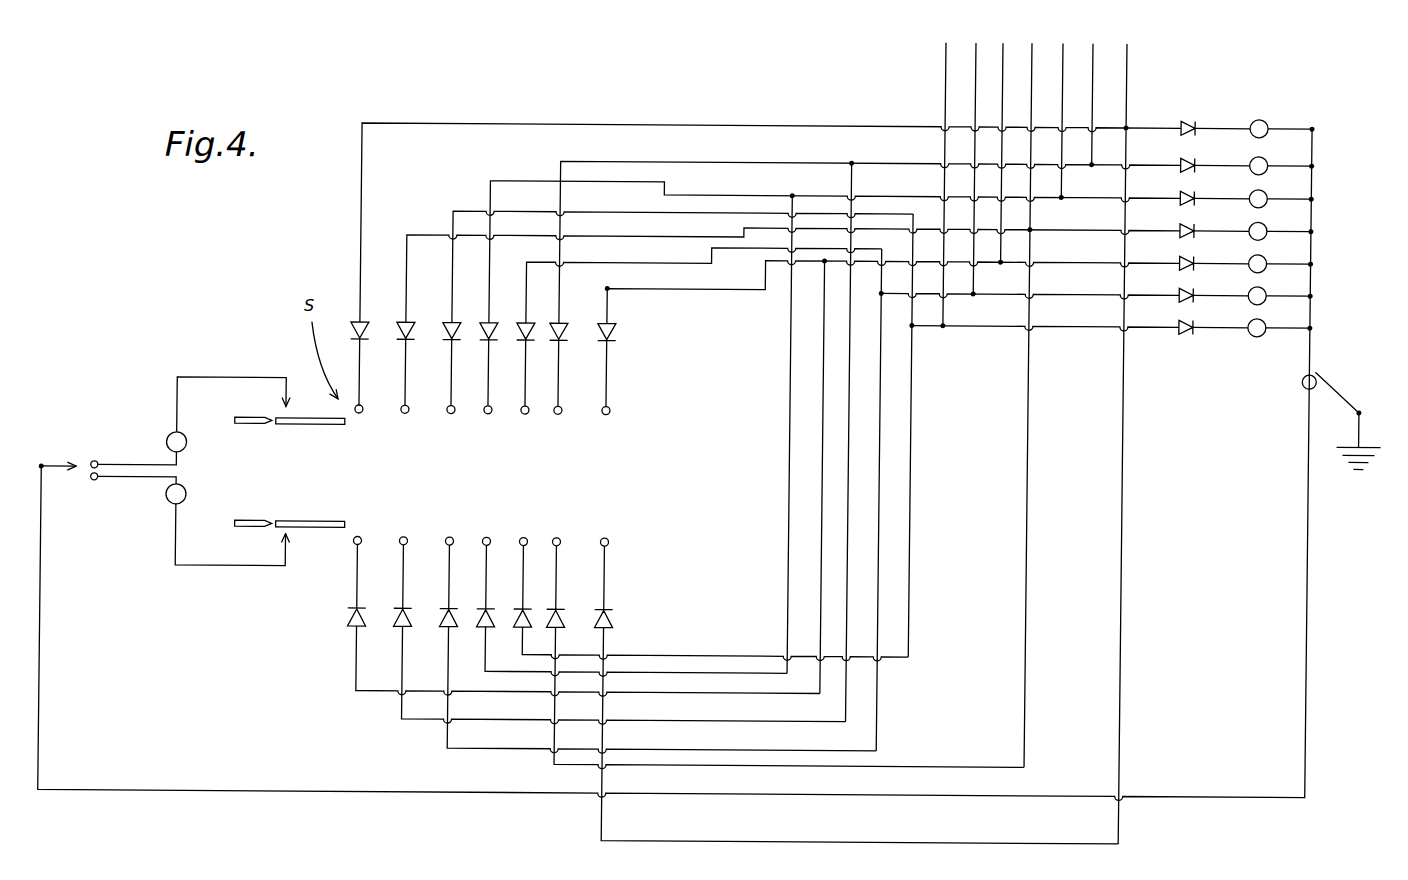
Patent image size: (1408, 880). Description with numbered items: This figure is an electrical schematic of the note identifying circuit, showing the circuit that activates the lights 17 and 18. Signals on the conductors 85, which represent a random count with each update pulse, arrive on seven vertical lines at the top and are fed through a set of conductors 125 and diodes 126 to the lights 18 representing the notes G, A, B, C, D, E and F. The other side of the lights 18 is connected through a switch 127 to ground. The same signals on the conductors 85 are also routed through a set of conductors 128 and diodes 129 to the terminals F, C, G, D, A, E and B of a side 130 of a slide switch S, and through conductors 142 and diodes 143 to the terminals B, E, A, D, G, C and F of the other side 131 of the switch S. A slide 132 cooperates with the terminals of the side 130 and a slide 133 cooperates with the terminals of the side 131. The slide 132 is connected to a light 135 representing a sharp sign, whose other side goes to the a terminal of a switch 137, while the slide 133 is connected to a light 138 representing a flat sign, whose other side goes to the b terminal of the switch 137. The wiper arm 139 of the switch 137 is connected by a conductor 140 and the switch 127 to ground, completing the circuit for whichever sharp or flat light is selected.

The lights 17 is at (156, 450).
The lights 18 is at (1267, 108).
The conductors 85 is at (975, 91).
The conductors 125 is at (1150, 193).
The diodes 126 is at (1209, 115).
The switch 127 is at (1347, 378).
The conductors 128 is at (752, 123).
The diodes 129 is at (624, 336).
The side of slide switch S 130 is at (591, 444).
The side of slide switch S 131 is at (592, 506).
The slide 132 is at (288, 426).
The slide 133 is at (282, 520).
The light 135 is at (176, 433).
The switch 137 is at (78, 448).
The light 138 is at (174, 501).
The wiper arm 139 is at (66, 472).
The conductor 140 is at (1314, 565).
The conductors 142 is at (825, 524).
The diodes 143 is at (624, 618).